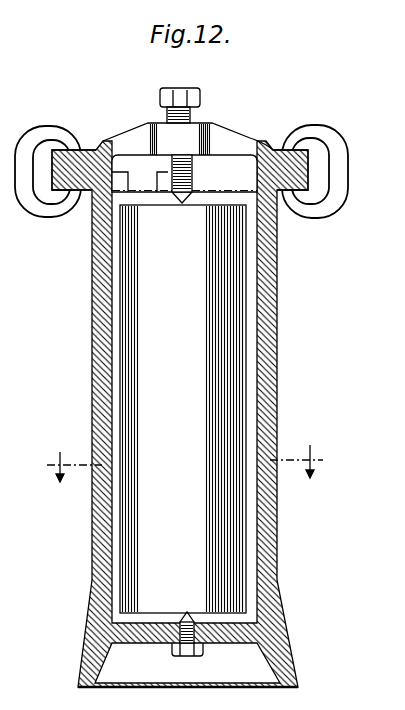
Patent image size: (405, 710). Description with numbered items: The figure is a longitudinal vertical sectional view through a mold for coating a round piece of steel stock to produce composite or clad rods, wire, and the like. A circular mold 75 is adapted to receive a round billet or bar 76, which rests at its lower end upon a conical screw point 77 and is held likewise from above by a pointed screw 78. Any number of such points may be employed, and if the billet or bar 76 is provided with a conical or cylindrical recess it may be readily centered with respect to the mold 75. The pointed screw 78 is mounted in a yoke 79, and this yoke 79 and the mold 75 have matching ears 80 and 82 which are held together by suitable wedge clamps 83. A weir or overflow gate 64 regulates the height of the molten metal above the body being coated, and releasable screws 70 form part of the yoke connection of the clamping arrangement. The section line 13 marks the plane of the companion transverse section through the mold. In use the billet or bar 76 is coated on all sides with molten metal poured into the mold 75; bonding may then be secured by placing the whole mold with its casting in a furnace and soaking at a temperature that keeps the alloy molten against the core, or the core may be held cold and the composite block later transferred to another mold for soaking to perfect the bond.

The releasable screws 70 is at (10, 95).
The wedge clamps 83 is at (37, 134).
The ear 82 is at (68, 156).
The ear 80 is at (62, 190).
The yoke 79 is at (238, 133).
The weir or overflow gate 64 is at (135, 180).
The pointed screw 78 is at (208, 144).
The round billet or bar 76 is at (232, 316).
The circular mold 75 is at (278, 353).
The conical screw point 77 is at (177, 645).
The section line 13 is at (186, 452).